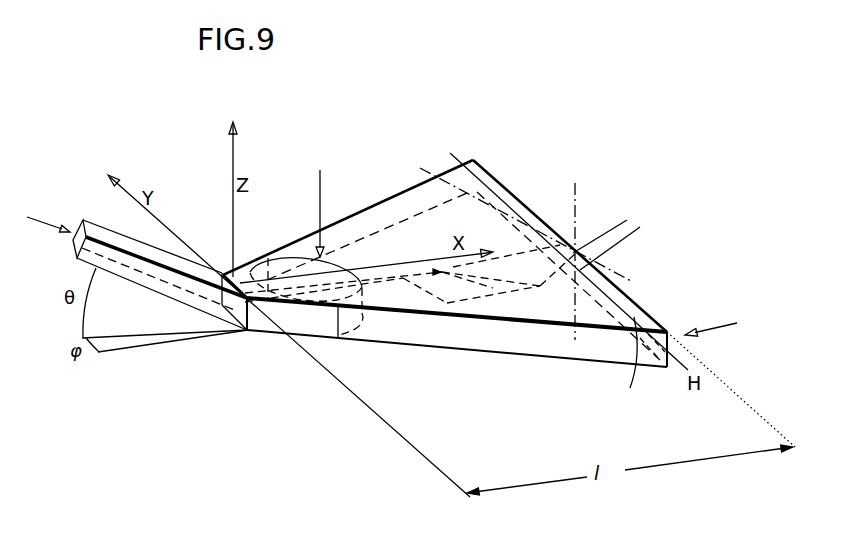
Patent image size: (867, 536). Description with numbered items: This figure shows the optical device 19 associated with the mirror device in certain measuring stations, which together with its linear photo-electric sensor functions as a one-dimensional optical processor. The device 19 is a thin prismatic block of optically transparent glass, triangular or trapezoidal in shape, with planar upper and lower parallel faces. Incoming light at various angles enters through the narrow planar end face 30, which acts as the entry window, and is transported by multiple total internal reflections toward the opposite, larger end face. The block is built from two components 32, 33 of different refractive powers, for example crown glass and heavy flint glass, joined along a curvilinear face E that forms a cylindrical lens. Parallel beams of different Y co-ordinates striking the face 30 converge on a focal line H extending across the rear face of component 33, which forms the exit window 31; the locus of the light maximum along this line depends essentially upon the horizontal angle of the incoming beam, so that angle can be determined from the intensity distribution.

The optical device 19 is at (388, 190).
The narrow planar end face 30 is at (242, 315).
The exit window 31 is at (647, 317).
The component of the block 32 is at (253, 265).
The component of the block 33 is at (440, 243).